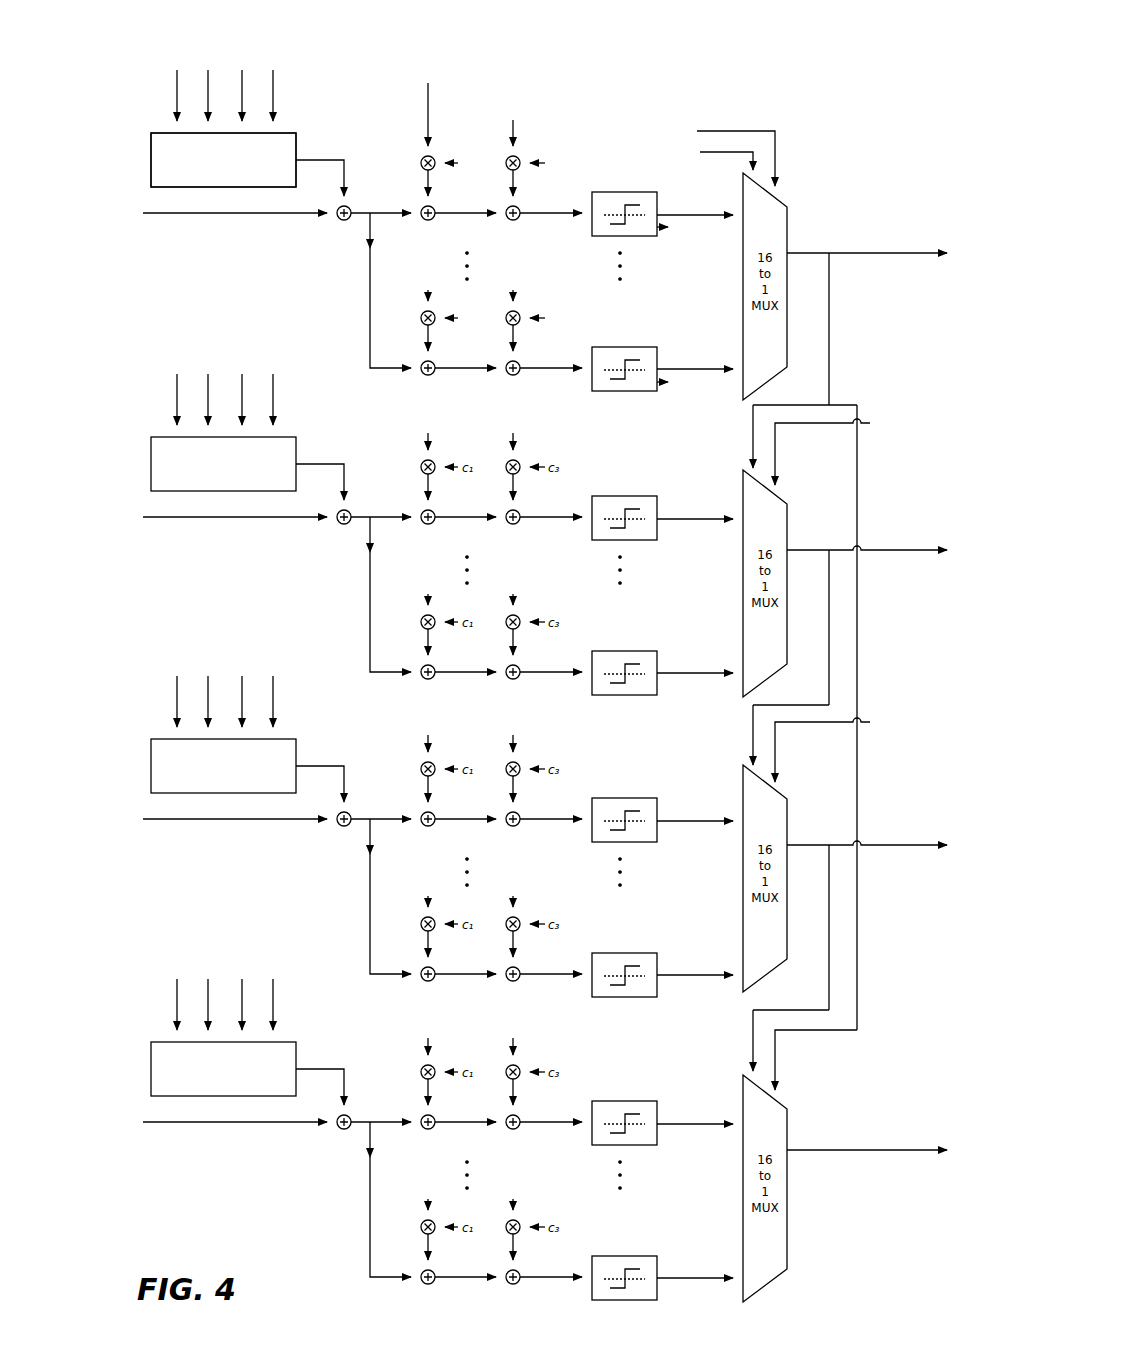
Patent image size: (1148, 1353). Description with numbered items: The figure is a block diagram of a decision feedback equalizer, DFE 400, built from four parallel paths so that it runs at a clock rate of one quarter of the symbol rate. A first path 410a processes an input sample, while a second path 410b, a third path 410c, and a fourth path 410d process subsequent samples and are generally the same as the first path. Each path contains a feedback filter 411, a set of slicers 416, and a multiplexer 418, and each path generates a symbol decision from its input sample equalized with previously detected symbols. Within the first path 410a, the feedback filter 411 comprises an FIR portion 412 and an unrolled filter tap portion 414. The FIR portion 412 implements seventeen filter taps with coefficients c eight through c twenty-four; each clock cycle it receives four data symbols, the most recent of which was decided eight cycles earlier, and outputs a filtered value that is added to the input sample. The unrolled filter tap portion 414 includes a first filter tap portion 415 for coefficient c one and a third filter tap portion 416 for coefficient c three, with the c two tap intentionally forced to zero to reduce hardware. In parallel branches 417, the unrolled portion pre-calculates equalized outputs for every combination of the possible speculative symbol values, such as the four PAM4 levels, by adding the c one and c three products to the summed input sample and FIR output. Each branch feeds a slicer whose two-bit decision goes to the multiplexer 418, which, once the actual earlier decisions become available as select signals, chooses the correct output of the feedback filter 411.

The decision feedback equalizer 400 is at (800, 44).
The first path 410a is at (124, 158).
The second path 410b is at (126, 457).
The third path 410c is at (134, 757).
The fourth path 410d is at (126, 1060).
The feedback filter 411 is at (304, 250).
The FIR portion 412 is at (223, 160).
The unrolled filter tap portion 414 is at (408, 124).
The first filter tap portion 415 is at (503, 67).
The third filter tap portion 416 is at (562, 75).
The parallel branches 417 is at (346, 292).
The multiplexer 418 is at (765, 286).